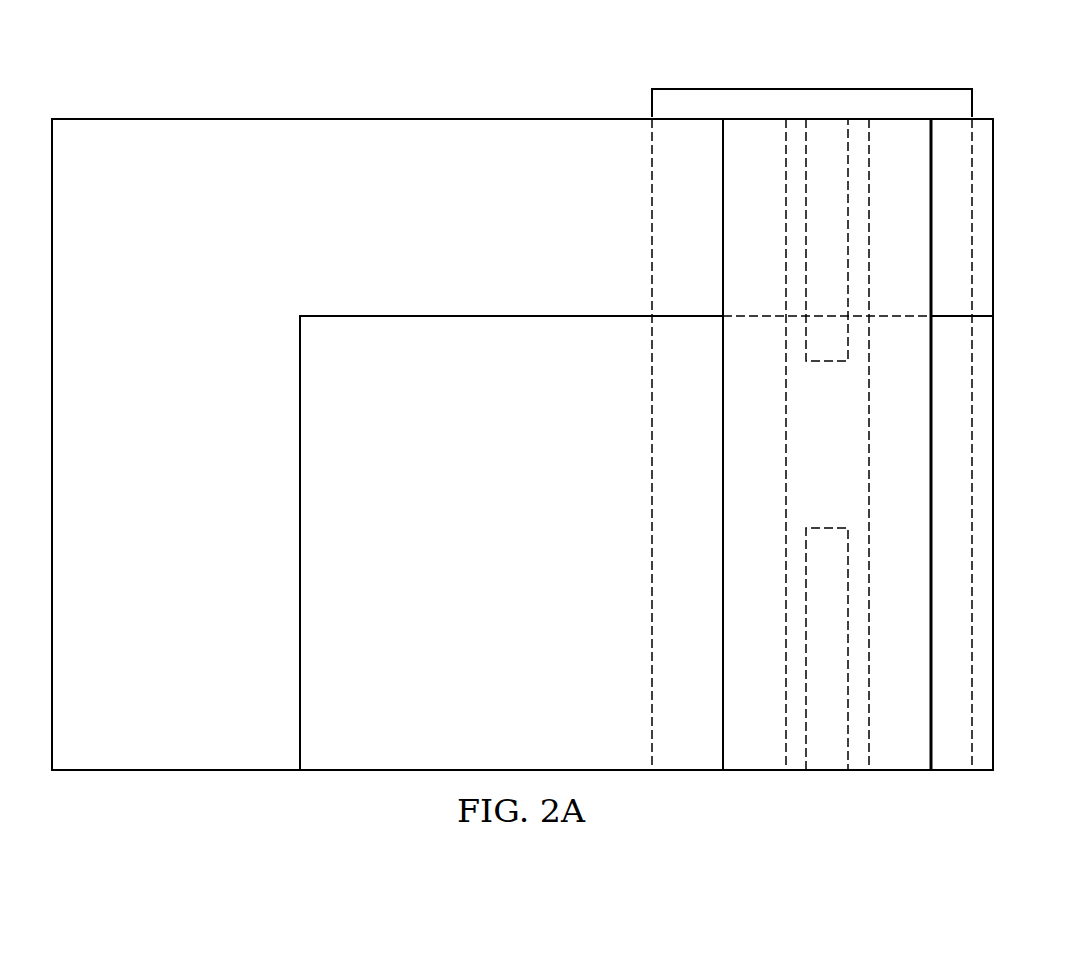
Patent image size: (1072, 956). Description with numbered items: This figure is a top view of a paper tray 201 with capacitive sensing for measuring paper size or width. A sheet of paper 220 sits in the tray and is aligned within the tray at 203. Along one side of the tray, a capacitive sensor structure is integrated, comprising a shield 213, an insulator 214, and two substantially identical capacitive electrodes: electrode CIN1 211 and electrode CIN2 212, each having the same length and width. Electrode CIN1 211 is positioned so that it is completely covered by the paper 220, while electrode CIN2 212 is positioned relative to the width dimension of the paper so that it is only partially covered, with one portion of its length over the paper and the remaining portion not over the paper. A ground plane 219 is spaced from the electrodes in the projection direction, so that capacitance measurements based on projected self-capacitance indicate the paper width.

The paper tray 201 is at (157, 247).
The paper 220 is at (492, 573).
The shield 213 is at (755, 762).
The insulator 214 is at (797, 127).
The ground plane 219 is at (910, 97).
The capacitive electrode CIN2 212 is at (828, 355).
The capacitive electrode CIN1 211 is at (829, 762).
The paper alignment edge 203 is at (993, 773).